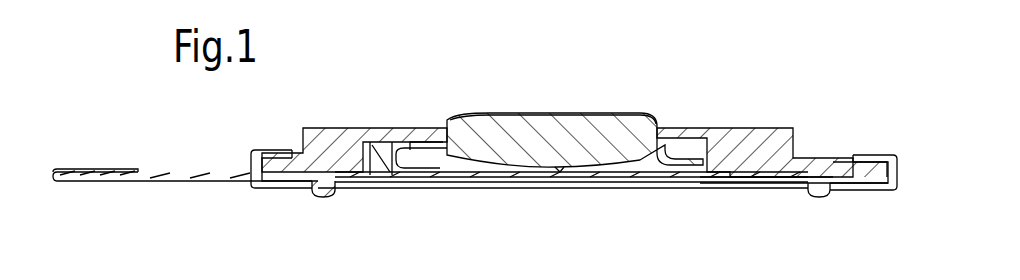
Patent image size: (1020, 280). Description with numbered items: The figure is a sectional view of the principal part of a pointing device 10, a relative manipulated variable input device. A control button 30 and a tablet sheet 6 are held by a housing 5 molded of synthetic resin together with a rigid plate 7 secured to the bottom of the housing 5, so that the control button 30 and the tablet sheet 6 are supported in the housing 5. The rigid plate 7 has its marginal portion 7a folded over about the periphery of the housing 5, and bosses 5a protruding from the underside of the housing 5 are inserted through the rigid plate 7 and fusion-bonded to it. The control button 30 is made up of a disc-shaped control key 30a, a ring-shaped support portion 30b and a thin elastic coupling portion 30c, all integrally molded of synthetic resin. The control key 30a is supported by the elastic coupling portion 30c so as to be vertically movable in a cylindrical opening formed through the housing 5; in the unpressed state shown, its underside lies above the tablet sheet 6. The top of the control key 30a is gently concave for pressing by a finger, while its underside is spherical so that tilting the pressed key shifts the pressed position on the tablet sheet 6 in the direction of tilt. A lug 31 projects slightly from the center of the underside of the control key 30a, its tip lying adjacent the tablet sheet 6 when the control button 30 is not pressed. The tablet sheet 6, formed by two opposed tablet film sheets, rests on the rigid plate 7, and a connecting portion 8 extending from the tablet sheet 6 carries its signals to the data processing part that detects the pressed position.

The pointing device 10 is at (752, 70).
The housing 5 is at (778, 128).
The bosses 5a is at (325, 196).
The tablet sheet 6 is at (615, 182).
The rigid plate 7 is at (738, 188).
The marginal portion 7a is at (868, 152).
The connecting portion 8 is at (153, 181).
The control button 30 is at (622, 130).
The control key 30a is at (498, 135).
The support portion 30b is at (378, 187).
The elastic coupling portion 30c is at (437, 150).
The lug 31 is at (560, 170).